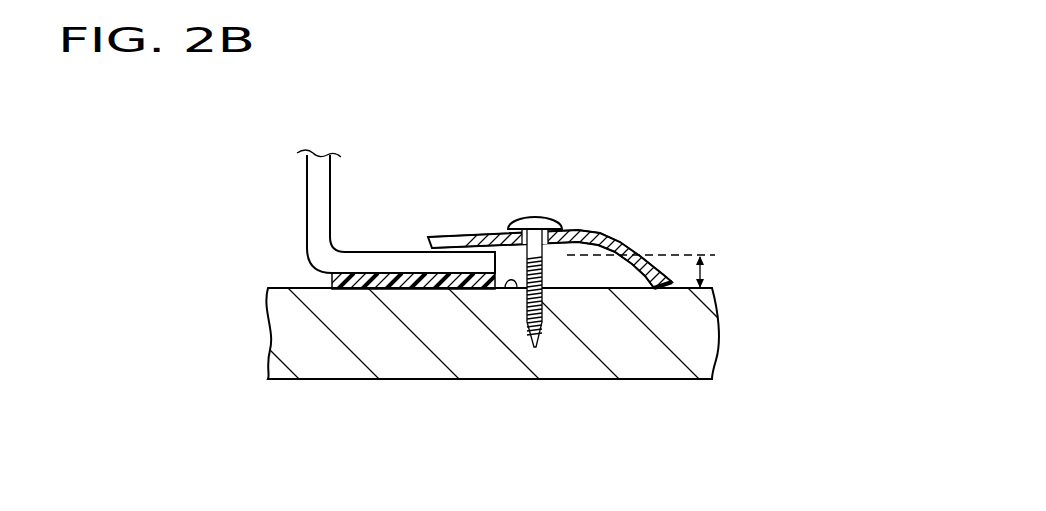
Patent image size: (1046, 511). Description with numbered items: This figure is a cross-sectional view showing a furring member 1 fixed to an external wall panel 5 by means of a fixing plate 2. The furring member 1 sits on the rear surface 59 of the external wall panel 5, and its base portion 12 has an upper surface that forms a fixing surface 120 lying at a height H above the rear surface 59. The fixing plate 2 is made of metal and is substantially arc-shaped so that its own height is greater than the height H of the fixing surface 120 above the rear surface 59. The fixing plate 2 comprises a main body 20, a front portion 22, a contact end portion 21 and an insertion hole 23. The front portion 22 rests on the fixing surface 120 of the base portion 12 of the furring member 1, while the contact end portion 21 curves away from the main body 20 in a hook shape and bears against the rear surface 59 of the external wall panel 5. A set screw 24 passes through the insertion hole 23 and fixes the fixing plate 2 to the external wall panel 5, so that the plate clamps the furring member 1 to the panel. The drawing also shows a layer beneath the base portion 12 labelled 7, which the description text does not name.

The furring member 1 is at (322, 157).
The base portion 12 is at (382, 252).
The fixing surface 120 is at (408, 250).
The fixing plate 2 is at (571, 268).
The insertion hole 23 is at (543, 218).
The set screw 24 is at (540, 254).
The main body 20 is at (573, 228).
The contact end portion 21 is at (643, 273).
The front portion 22 is at (483, 230).
The external wall panel 5 is at (668, 335).
The seal gasket 7 is at (408, 288).
The rear surface 59 is at (505, 288).
The height H is at (703, 279).